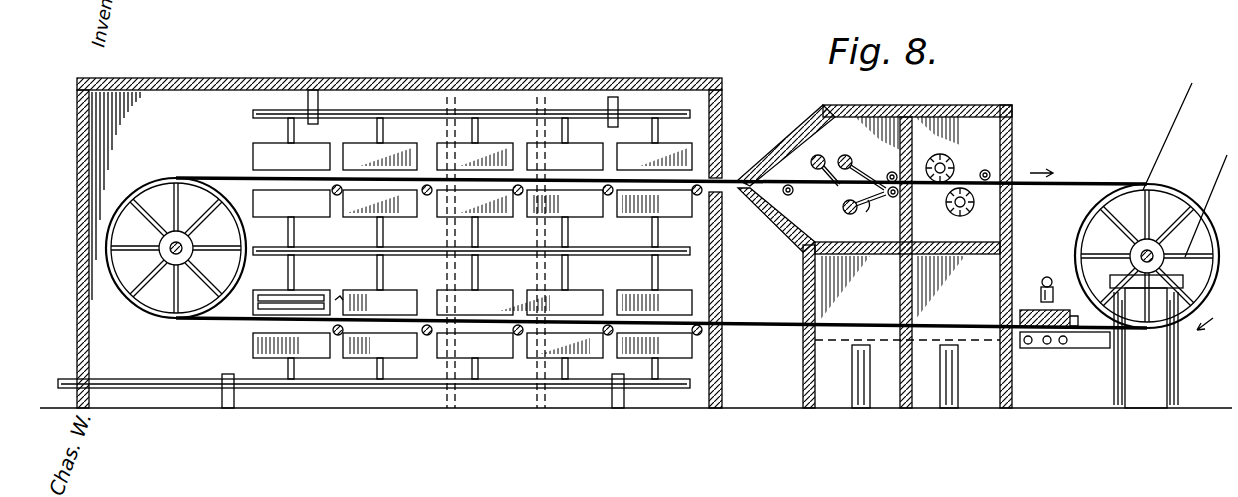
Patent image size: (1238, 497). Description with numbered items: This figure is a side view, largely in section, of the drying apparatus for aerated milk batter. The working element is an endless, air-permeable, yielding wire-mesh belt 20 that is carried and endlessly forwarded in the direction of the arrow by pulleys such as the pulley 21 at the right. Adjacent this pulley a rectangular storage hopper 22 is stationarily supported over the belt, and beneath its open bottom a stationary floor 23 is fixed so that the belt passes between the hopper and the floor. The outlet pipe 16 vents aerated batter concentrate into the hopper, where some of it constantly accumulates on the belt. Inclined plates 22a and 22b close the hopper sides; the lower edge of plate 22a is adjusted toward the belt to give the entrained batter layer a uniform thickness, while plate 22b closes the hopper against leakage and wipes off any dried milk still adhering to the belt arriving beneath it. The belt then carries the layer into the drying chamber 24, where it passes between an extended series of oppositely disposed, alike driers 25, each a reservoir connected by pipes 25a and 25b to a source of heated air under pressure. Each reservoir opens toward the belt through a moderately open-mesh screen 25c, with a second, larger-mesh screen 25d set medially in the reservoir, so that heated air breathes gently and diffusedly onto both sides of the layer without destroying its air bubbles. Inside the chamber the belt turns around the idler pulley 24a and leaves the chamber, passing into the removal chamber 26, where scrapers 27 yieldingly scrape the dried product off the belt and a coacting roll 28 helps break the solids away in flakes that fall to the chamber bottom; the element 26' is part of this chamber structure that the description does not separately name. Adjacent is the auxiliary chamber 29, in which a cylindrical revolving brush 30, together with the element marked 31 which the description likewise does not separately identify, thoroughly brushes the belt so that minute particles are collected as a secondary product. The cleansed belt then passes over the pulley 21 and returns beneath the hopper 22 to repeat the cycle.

The outlet pipe 16 is at (1050, 276).
The belt 20 is at (661, 245).
The pulley 21 is at (1178, 188).
The storage hopper 22 is at (1042, 348).
The inclined plate 22a is at (1022, 310).
The inclined plate 22b is at (1078, 320).
The floor 23 is at (1066, 348).
The drying chamber 24 is at (600, 92).
The belt idler wheel 24a is at (158, 180).
The driers 25 is at (472, 248).
The pipe 25a is at (632, 118).
The pipe 25b is at (476, 244).
The screen 25c is at (300, 303).
The screen 25d is at (340, 298).
The removal chamber 26 is at (893, 256).
The partition wall 26' is at (919, 262).
The scrapers 27 is at (830, 156).
The coacting roll 28 is at (890, 172).
The auxiliary chamber 29 is at (1012, 212).
The cylindrical revolving brush 30 is at (946, 157).
The lower gear wheel 31 is at (962, 216).